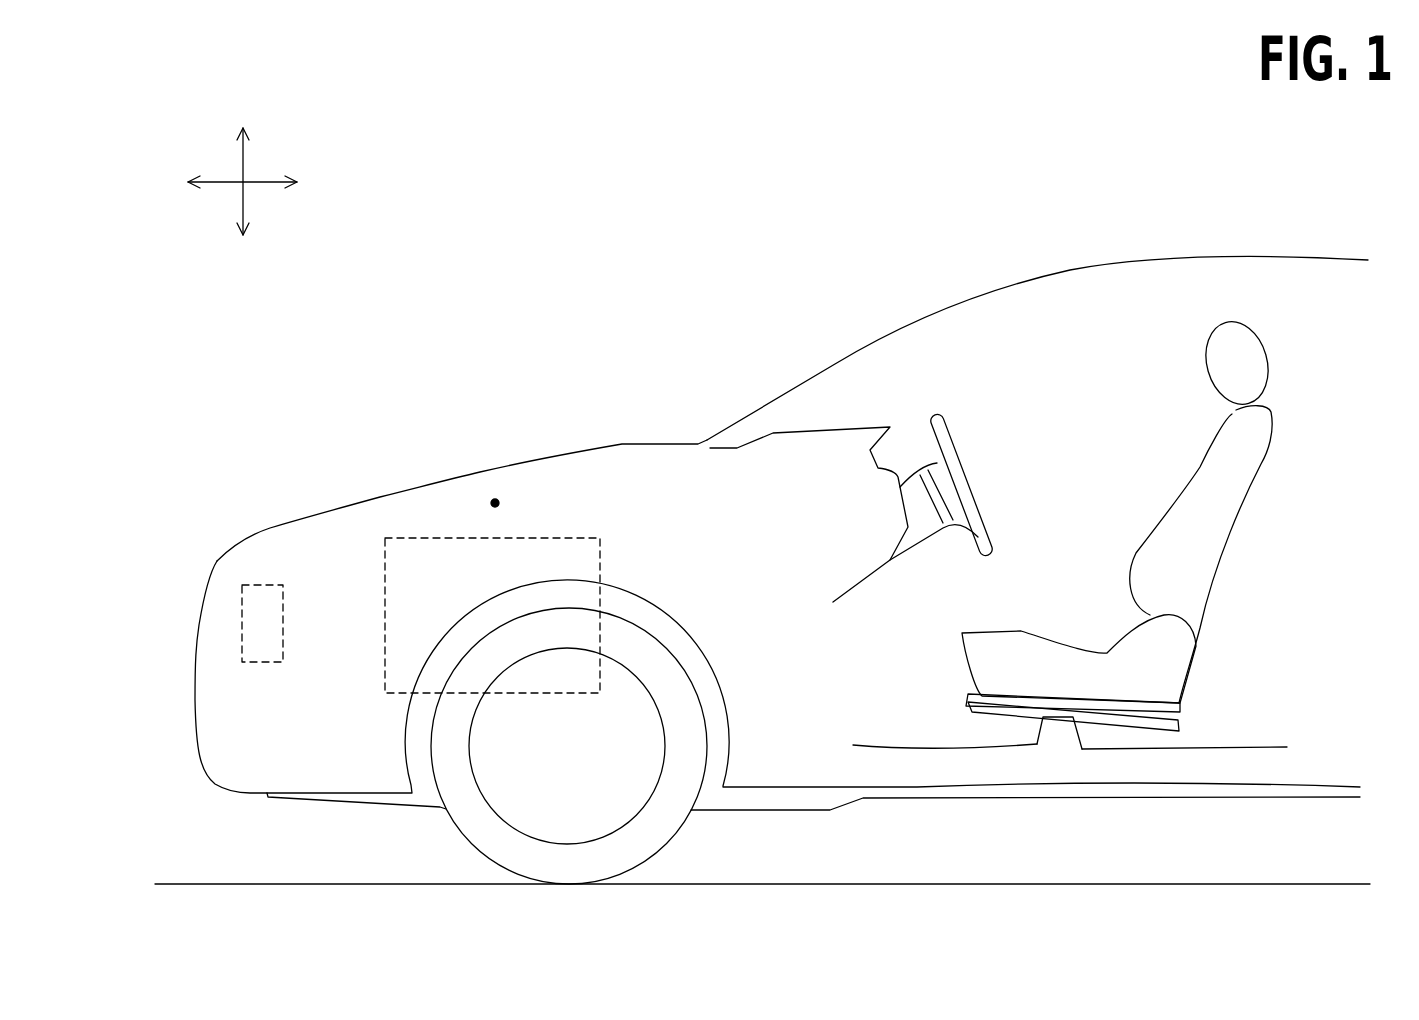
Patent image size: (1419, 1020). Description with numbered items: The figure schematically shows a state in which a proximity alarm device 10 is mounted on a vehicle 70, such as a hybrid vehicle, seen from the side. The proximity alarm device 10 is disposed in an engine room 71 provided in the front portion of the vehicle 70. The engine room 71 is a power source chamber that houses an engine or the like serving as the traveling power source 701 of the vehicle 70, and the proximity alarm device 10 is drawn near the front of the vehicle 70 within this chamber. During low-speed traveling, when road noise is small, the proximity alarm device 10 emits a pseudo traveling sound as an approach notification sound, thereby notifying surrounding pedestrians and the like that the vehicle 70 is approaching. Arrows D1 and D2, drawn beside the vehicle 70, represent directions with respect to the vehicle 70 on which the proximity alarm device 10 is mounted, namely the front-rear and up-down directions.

The vehicle 70 is at (1308, 255).
The engine room 71 is at (497, 495).
The traveling power source 701 is at (562, 552).
The proximity alarm device 10 is at (266, 585).
The arrow D1 is at (257, 187).
The arrow D2 is at (243, 162).